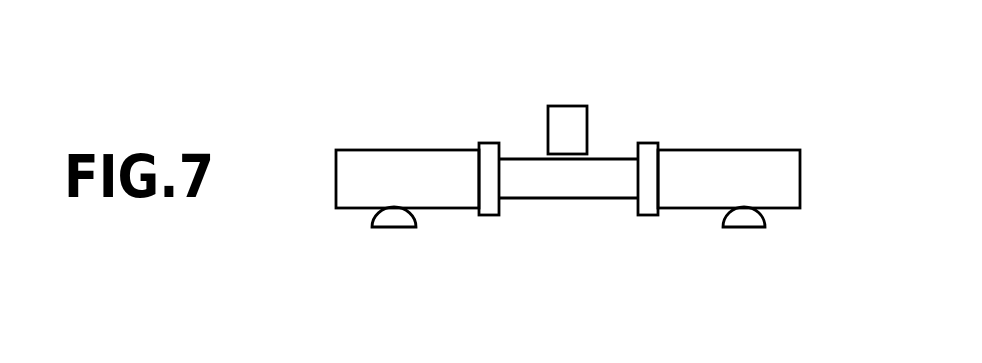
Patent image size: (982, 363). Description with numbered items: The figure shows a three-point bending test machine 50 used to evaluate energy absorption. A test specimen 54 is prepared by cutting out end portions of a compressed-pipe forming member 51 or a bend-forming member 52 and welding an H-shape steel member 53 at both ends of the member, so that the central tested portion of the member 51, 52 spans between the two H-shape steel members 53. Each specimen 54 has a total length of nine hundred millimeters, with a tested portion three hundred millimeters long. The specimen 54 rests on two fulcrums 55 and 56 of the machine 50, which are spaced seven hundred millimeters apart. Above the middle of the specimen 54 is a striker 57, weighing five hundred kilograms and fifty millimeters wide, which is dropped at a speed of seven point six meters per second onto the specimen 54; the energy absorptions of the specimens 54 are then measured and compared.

The three-point bending test machine 50 is at (456, 62).
The compressed-pipe forming member 51 is at (567, 190).
The bend-forming member 52 is at (568, 214).
The H-shape steel member 53 is at (408, 165).
The test specimen 54 is at (781, 148).
The fulcrum 55 is at (393, 220).
The fulcrum 56 is at (743, 220).
The striker 57 is at (568, 116).